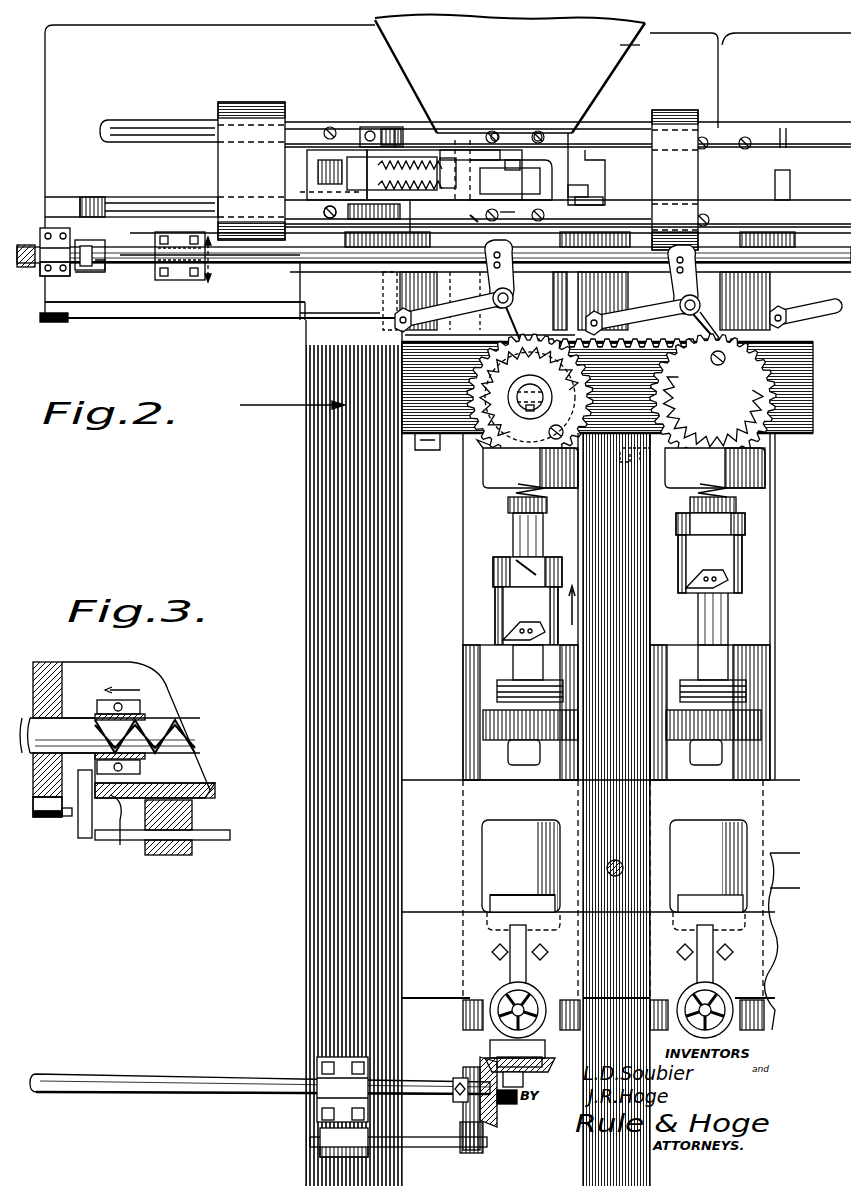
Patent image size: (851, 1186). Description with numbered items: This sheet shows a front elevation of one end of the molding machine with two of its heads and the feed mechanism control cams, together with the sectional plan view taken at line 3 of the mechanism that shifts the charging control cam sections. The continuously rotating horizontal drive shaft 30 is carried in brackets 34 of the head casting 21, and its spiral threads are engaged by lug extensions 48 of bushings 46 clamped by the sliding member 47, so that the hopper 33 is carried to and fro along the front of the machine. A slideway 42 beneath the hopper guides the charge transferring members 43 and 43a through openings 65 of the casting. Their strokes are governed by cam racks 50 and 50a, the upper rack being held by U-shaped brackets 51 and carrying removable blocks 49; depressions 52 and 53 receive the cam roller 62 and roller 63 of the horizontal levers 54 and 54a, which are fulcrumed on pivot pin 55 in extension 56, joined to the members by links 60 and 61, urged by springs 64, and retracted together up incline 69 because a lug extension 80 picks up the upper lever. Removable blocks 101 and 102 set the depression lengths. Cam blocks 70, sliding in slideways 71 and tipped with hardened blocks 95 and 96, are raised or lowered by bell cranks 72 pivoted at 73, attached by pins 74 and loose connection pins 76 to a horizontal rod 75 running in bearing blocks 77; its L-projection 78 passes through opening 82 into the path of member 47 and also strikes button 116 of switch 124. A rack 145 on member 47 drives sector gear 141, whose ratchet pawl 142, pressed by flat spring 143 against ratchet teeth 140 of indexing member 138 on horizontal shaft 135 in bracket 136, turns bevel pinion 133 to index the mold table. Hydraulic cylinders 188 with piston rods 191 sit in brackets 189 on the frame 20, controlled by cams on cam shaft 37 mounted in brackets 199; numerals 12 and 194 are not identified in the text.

In FIG. 2, the section line 3— 3 is at (33, 240).
In FIG. 2, the pivot pin 12 is at (527, 262).
In FIG. 2, the frame 20 is at (312, 1012).
In FIG. 2, the head casting 21 is at (247, 305).
In FIG. 3, the head casting 21 is at (72, 662).
In FIG. 2, the horizontal drive shaft 30 is at (25, 265).
In FIG. 3, the horizontal drive shaft 30 is at (70, 730).
In FIG. 2, the hopper 33 is at (642, 52).
In FIG. 2, the brackets or extensions 34 is at (52, 322).
In FIG. 3, the brackets or extensions 34 is at (45, 662).
In FIG. 2, the cam shaft 37 is at (412, 1085).
In FIG. 2, the slideway 42 is at (540, 192).
In FIG. 2, the charge transferring member 43 is at (545, 200).
In FIG. 2, the charge transferring member 43a is at (520, 162).
In FIG. 3, the bushings 46 is at (145, 714).
In FIG. 3, the sliding member 47 is at (135, 707).
In FIG. 3, the lug extensions 48 is at (122, 679).
In FIG. 2, the removable blocks 49 is at (727, 140).
In FIG. 2, the cam rack 50 is at (145, 205).
In FIG. 2, the cam rack 50a is at (163, 125).
In FIG. 2, the U-shaped brackets 51 is at (245, 112).
In FIG. 2, the depressions 52 is at (568, 216).
In FIG. 2, the depressions 53 is at (400, 138).
In FIG. 2, the horizontal lever 54 is at (412, 200).
In FIG. 2, the horizontal lever 54a is at (478, 160).
In FIG. 2, the pivot pin 55 is at (300, 190).
In FIG. 2, the extension 56 is at (310, 172).
In FIG. 2, the link 60 is at (524, 186).
In FIG. 2, the link 61 is at (512, 170).
In FIG. 2, the cam roller 62 is at (388, 226).
In FIG. 2, the roller 63 is at (362, 127).
In FIG. 2, the spring 64 is at (440, 160).
In FIG. 2, the openings 65 is at (578, 170).
In FIG. 2, the incline 69 is at (485, 230).
In FIG. 2, the cam blocks 70 is at (400, 290).
In FIG. 2, the slideways 71 is at (383, 272).
In FIG. 2, the bell crank 72 is at (400, 330).
In FIG. 2, the pivot 73 is at (538, 338).
In FIG. 2, the pin 74 is at (390, 326).
In FIG. 2, the horizontal rod 75 is at (295, 258).
In FIG. 3, the horizontal rod 75 is at (222, 840).
In FIG. 2, the loose connection pin 76 is at (523, 268).
In FIG. 2, the bearing blocks 77 is at (178, 275).
In FIG. 3, the bearing blocks 77 is at (160, 848).
In FIG. 2, the L-projection 78 is at (88, 270).
In FIG. 3, the L-projection 78 is at (86, 815).
In FIG. 2, the lug extension 80 is at (462, 158).
In FIG. 2, the opening 82 is at (106, 268).
In FIG. 3, the opening 82 is at (121, 839).
In FIG. 2, the hardened steel block 95 is at (345, 262).
In FIG. 2, the hardened steel block 96 is at (595, 239).
In FIG. 2, the removable block 101 is at (325, 216).
In FIG. 2, the removable block 102 is at (508, 222).
In FIG. 2, the button 116 is at (50, 270).
In FIG. 3, the button 116 is at (65, 816).
In FIG. 2, the second electrical spring switch 124 is at (54, 246).
In FIG. 3, the second electrical spring switch 124 is at (33, 817).
In FIG. 2, the bevel pinion 133 is at (578, 478).
In FIG. 2, the horizontal shaft 135 is at (535, 392).
In FIG. 2, the bracket 136 is at (432, 436).
In FIG. 2, the indexing member 138 is at (470, 385).
In FIG. 2, the ratchet teeth 140 is at (470, 400).
In FIG. 2, the sector gear 141 is at (712, 362).
In FIG. 2, the ratchet pawl 142 is at (530, 445).
In FIG. 2, the flat spring 143 is at (560, 380).
In FIG. 2, the rack 145 is at (700, 320).
In FIG. 2, the hydraulic cylinders 188 is at (470, 664).
In FIG. 2, the brackets 189 is at (601, 890).
In FIG. 2, the piston rod 191 is at (508, 526).
In FIG. 2, the hand wheel 194 is at (490, 1040).
In FIG. 2, the brackets 199 is at (315, 1078).